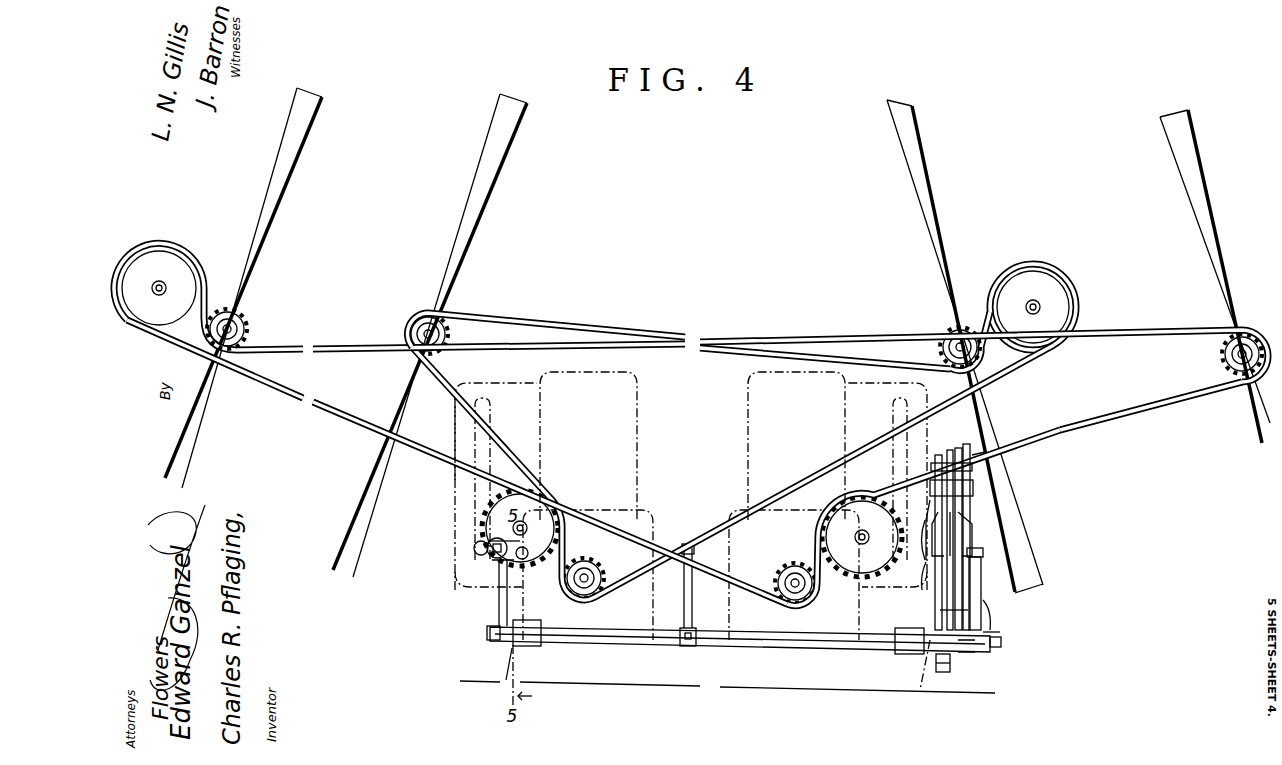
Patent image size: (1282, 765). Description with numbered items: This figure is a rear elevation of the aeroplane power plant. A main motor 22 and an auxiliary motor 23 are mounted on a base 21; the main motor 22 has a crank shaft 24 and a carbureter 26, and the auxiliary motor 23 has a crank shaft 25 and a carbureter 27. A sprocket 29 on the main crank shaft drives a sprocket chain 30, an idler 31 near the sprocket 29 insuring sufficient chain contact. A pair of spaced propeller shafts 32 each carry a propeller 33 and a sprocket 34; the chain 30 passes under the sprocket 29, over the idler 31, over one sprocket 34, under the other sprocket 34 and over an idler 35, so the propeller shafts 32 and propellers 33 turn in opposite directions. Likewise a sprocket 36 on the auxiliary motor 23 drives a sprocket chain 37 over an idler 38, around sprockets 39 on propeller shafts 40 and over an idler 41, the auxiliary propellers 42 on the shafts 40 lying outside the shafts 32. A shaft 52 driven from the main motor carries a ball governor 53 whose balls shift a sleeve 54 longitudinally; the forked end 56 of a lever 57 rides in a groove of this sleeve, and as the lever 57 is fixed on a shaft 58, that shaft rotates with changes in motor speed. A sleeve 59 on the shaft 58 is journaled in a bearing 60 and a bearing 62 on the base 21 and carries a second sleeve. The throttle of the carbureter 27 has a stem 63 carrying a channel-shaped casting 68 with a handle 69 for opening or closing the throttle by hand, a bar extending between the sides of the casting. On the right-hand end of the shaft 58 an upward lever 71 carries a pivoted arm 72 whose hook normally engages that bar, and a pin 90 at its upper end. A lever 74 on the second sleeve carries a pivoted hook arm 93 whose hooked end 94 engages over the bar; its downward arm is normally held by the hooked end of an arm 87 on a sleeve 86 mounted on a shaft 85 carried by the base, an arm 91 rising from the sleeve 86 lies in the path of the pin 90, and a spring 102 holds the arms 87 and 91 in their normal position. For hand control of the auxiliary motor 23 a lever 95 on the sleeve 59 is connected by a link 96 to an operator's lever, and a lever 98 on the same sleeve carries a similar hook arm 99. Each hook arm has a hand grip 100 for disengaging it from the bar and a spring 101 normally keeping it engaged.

The base 21 is at (727, 698).
The main motor 22 is at (606, 446).
The auxiliary motor 23 is at (778, 446).
The crank shaft 24 is at (601, 575).
The crank shaft 25 is at (781, 569).
The carbureter 26 is at (436, 460).
The carbureter 27 is at (923, 518).
The sprocket 29 is at (808, 481).
The sprocket chain 30 is at (837, 351).
The idler 31 is at (501, 456).
The propeller shafts 32 is at (695, 322).
The propeller 33 is at (688, 343).
The sprocket 34 is at (694, 320).
The idler 35 is at (1033, 294).
The sprocket 36 is at (762, 612).
The sprocket chain 37 is at (739, 383).
The idler 38 is at (862, 555).
The sprockets 39 is at (741, 360).
The propeller shafts 40 is at (738, 320).
The idler 41 is at (175, 278).
The auxiliary propellers 42 is at (717, 288).
The shaft 52 is at (492, 563).
The governor 53 is at (451, 562).
The sleeve 54 is at (465, 540).
The forked end 56 is at (531, 573).
The lever 57 is at (486, 593).
The shaft 58 is at (478, 645).
The sleeve 59 is at (740, 651).
The bearing 60 is at (527, 650).
The bearing 62 is at (894, 657).
The stem 63 is at (985, 490).
The casting 68 is at (987, 465).
The handle 69 is at (996, 436).
The lever 71 is at (977, 608).
The arm 72 is at (976, 539).
The lever 74 is at (1009, 615).
The shaft 85 is at (1005, 656).
The sleeve 86 is at (970, 660).
The arm 87 is at (940, 686).
The pin 90 is at (989, 556).
The arm 91 is at (990, 593).
The hook arm 93 is at (965, 534).
The hooked end 94 is at (957, 523).
The lever 95 is at (676, 597).
The link 96 is at (706, 552).
The lever 98 is at (921, 542).
The hook arm 99 is at (920, 528).
The hand grip 100 is at (942, 531).
The springs 101 is at (975, 555).
The spring 102 is at (1018, 645).